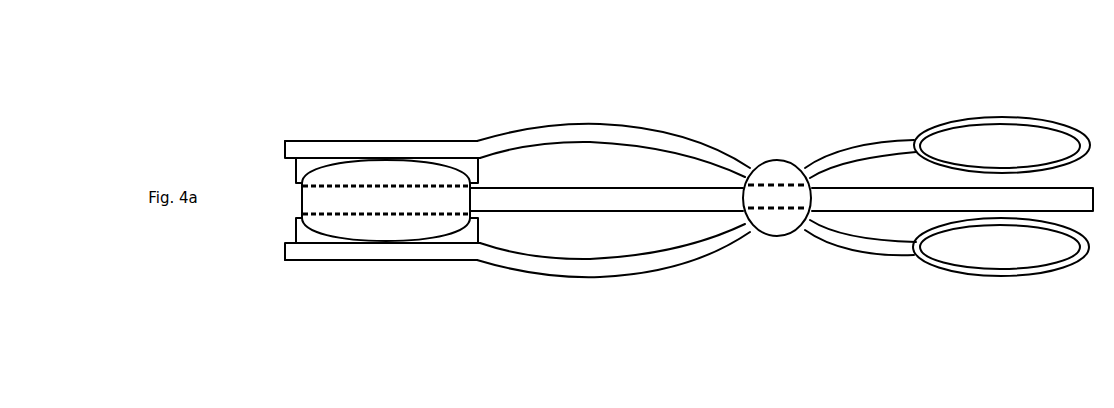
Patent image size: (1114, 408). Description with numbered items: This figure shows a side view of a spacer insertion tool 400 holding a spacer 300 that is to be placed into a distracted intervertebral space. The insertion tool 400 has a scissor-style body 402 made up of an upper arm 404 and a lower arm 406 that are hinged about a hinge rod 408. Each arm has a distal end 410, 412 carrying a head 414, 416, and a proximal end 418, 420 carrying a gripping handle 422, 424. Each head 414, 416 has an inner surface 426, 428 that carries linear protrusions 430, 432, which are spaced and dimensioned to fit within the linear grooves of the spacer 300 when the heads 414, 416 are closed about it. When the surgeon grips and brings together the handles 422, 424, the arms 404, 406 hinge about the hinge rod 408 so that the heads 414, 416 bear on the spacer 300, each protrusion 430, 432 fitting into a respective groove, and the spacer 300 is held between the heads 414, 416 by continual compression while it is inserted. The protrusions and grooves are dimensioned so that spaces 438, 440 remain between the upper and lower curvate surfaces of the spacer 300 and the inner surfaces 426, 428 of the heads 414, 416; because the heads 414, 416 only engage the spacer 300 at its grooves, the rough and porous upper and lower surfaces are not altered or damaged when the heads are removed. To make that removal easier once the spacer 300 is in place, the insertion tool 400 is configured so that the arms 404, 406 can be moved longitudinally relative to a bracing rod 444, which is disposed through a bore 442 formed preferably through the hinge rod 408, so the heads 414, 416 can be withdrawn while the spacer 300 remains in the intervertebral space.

The spacer 300 is at (290, 194).
The spacer insertion tool 400 is at (495, 75).
The scissor-style body 402 is at (596, 107).
The upper arm 404 is at (665, 117).
The lower arm 406 is at (669, 276).
The hinge rod 408 is at (779, 150).
The distal end 410 is at (268, 122).
The distal end 412 is at (267, 271).
The head 414 is at (364, 132).
The head 416 is at (362, 268).
The proximal end 418 is at (914, 103).
The proximal end 420 is at (903, 300).
The gripping handle 422 is at (1000, 104).
The gripping handle 424 is at (999, 288).
The inner surface 426 is at (276, 155).
The inner surface 428 is at (276, 245).
The linear protrusion 430 is at (306, 165).
The linear protrusion 432 is at (303, 241).
The space 438 is at (395, 148).
The space 440 is at (393, 256).
The bore 442 is at (769, 226).
The bracing rod 444 is at (560, 203).